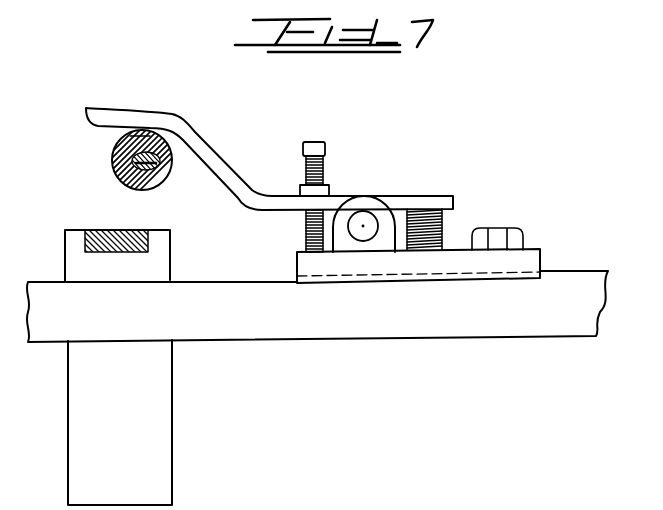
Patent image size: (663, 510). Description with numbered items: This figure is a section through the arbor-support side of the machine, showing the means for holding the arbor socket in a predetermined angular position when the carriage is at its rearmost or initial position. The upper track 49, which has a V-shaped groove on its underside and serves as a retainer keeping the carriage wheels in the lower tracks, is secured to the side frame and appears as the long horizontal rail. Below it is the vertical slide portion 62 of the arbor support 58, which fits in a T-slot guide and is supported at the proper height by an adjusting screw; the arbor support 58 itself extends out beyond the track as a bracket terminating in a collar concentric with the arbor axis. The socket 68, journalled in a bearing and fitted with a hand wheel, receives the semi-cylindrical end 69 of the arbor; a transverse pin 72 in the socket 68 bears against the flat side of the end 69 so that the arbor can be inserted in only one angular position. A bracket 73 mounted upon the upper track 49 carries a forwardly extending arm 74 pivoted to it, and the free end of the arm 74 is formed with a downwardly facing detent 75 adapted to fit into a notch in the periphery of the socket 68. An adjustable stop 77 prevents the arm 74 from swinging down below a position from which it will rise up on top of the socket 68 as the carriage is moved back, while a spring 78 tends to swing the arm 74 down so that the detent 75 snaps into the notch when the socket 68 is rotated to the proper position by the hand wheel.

The upper track 49 is at (572, 284).
The slide portion 62 is at (93, 428).
The arbor support 58 is at (85, 247).
The transverse pin 72 is at (165, 178).
The end of the arbor 69 is at (135, 153).
The socket 68 is at (126, 183).
The detent 75 is at (130, 135).
The arm 74 is at (236, 182).
The adjustable stop 77 is at (324, 174).
The spring 78 is at (443, 222).
The bracket 73 is at (532, 257).